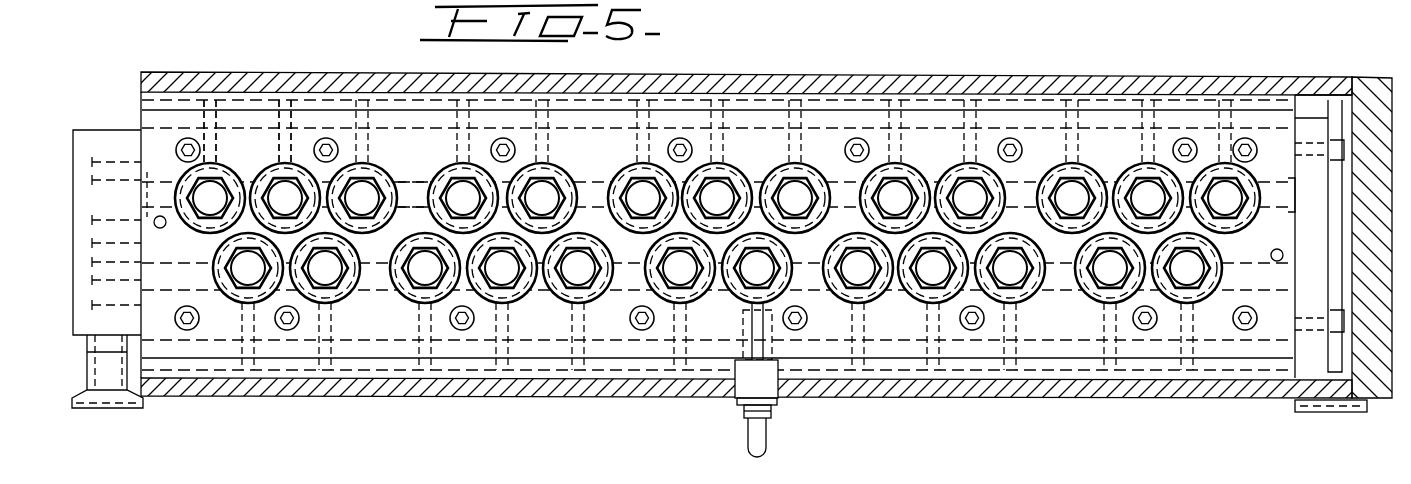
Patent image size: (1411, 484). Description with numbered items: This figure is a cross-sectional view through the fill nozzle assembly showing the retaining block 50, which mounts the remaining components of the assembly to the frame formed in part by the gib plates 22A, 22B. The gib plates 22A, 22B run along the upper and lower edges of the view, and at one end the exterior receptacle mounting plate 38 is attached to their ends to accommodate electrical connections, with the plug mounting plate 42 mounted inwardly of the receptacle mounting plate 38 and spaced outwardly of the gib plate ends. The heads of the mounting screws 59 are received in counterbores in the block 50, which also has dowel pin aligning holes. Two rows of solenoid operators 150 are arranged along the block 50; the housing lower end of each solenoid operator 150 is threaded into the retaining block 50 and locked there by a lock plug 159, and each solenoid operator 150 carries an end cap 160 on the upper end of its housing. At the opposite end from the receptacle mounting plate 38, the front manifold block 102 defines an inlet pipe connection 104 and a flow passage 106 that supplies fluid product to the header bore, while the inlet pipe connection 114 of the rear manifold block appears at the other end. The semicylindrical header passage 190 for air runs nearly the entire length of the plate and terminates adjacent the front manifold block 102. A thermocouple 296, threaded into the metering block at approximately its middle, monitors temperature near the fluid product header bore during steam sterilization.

The gib plate 22A is at (1028, 88).
The gib plate 22B is at (1013, 385).
The exterior receptacle mounting plate 38 is at (1383, 85).
The plug mounting plate 42 is at (1335, 105).
The retaining block 50 is at (858, 118).
The mounting screws 59 is at (178, 150).
The front manifold block 102 is at (115, 143).
The inlet pipe connection 104 is at (127, 408).
The flow passage 106 is at (112, 328).
The inlet pipe connection 114 is at (1342, 410).
The solenoid operator 150 is at (253, 175).
The lock plug 159 is at (290, 110).
The end cap 160 is at (357, 192).
The semicylindrical header passage 190 is at (403, 186).
The thermocouple 296 is at (776, 430).